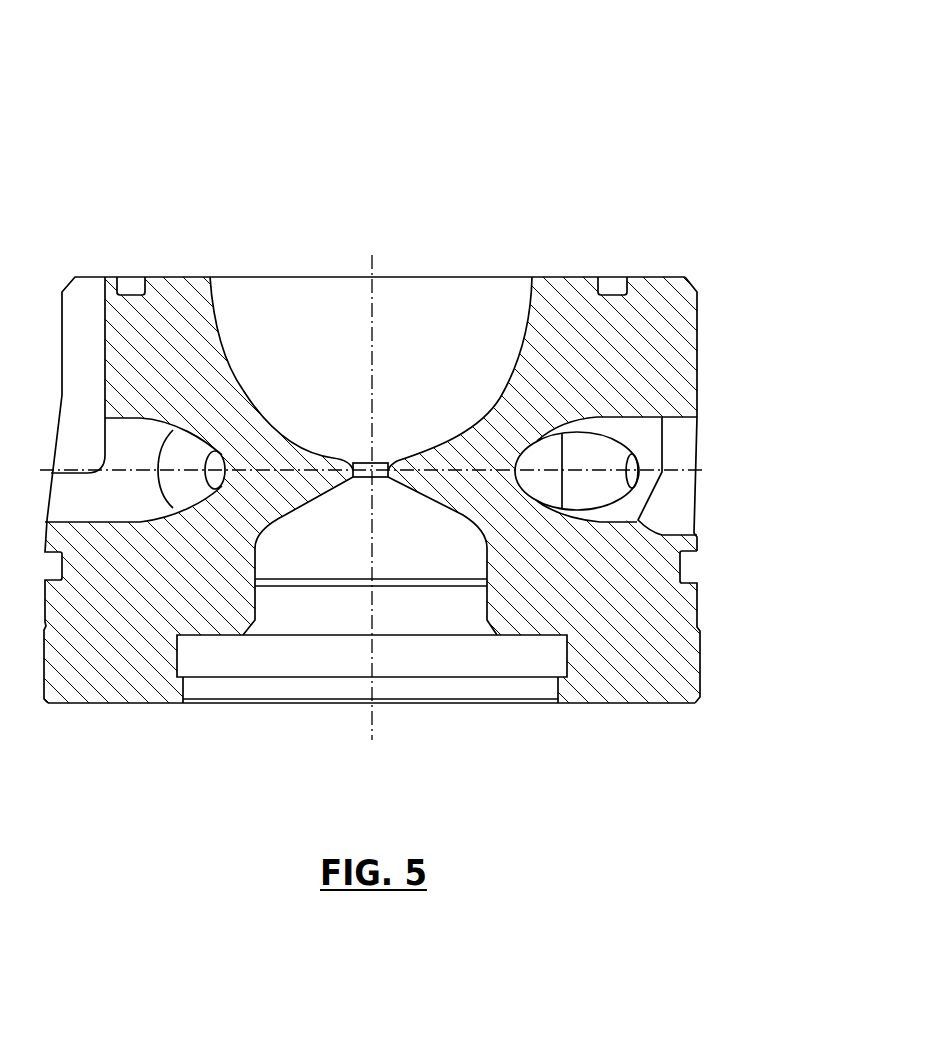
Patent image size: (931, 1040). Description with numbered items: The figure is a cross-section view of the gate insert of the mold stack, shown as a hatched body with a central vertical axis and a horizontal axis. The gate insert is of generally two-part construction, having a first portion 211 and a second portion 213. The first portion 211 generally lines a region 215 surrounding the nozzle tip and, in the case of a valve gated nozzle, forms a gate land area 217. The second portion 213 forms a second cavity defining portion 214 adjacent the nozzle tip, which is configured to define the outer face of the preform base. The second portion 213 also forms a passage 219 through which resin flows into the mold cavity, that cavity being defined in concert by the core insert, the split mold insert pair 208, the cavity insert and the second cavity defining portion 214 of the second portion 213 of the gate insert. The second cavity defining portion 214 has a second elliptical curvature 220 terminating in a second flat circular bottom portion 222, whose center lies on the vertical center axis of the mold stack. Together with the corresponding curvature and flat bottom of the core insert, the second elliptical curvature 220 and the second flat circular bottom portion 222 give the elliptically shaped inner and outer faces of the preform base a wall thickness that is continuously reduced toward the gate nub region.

The split mold insert pair 208 is at (718, 165).
The second portion 213 is at (738, 358).
The first portion 211 is at (737, 630).
The second cavity defining portion 214 is at (220, 342).
The second flat circular bottom portion 222 is at (327, 453).
The passage 219 is at (380, 450).
The second elliptical curvature 220 is at (513, 372).
The region surrounding a nozzle tip 215 is at (285, 515).
The gate land area 217 is at (383, 478).